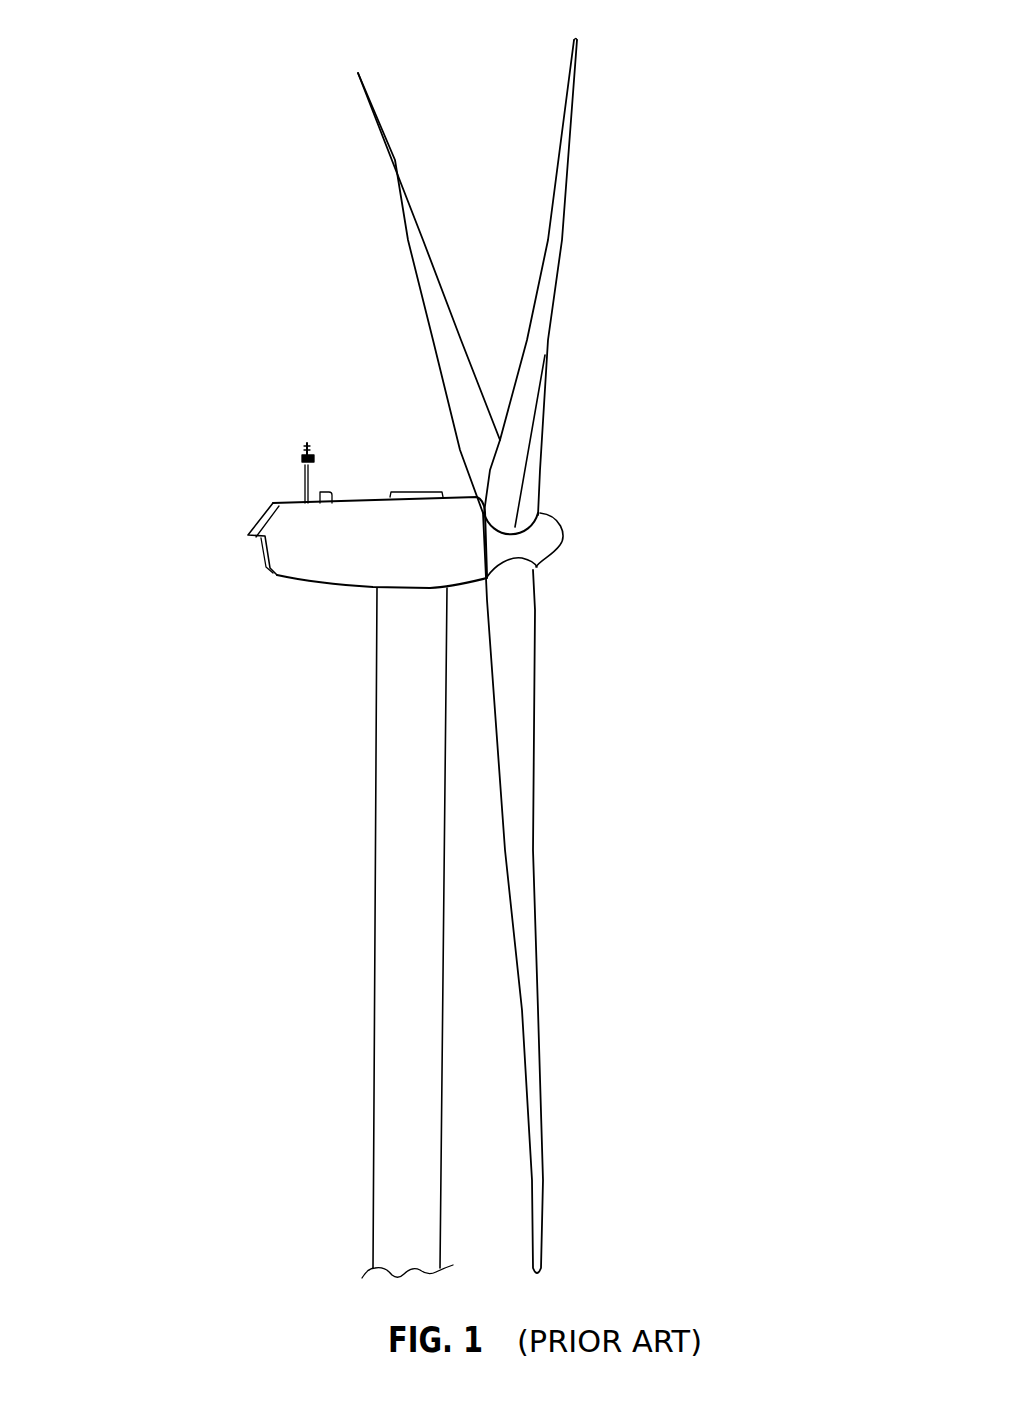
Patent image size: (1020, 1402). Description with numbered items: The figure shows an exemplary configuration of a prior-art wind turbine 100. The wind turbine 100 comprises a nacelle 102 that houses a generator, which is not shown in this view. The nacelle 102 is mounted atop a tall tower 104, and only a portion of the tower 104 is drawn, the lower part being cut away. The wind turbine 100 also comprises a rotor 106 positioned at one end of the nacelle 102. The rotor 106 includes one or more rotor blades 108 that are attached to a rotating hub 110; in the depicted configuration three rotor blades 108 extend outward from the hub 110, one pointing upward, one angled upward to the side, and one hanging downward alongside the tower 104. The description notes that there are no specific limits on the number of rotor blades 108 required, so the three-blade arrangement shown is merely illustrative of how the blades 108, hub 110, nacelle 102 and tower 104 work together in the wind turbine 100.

The wind turbine 100 is at (213, 296).
The nacelle 102 is at (323, 583).
The tower 104 is at (375, 877).
The rotor 106 is at (640, 325).
The rotor blades 108 is at (398, 160).
The rotating hub 110 is at (555, 548).